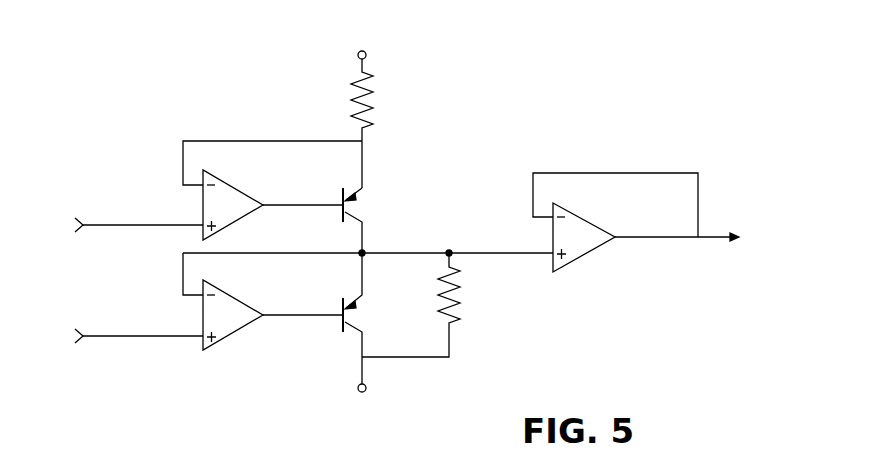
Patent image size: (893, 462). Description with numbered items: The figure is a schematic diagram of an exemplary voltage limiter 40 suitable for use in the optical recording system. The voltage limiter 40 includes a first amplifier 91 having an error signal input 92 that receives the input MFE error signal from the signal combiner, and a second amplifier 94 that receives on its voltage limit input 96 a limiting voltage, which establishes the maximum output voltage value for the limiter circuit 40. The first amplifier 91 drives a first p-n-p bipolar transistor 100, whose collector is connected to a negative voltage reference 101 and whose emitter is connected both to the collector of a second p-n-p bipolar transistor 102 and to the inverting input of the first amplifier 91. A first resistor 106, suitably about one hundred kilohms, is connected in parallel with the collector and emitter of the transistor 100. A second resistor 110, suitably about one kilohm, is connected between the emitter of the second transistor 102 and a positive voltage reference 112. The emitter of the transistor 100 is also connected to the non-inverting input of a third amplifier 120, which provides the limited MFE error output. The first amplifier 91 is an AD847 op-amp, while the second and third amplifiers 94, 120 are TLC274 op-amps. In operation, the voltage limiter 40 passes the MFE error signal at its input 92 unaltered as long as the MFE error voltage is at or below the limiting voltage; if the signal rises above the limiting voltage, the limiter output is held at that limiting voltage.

The voltage limiter 40 is at (165, 56).
The voltage limit input 96 is at (203, 224).
The second amplifier 94 is at (243, 217).
The error signal input 92 is at (203, 335).
The first amplifier 91 is at (240, 333).
The positive voltage reference 112 is at (360, 50).
The second resistor 110 is at (351, 109).
The second p-n-p bipolar transistor 102 is at (357, 212).
The first p-n-p bipolar transistor 100 is at (357, 323).
The first resistor 106 is at (455, 318).
The negative voltage reference 101 is at (366, 391).
The third amplifier 120 is at (592, 251).